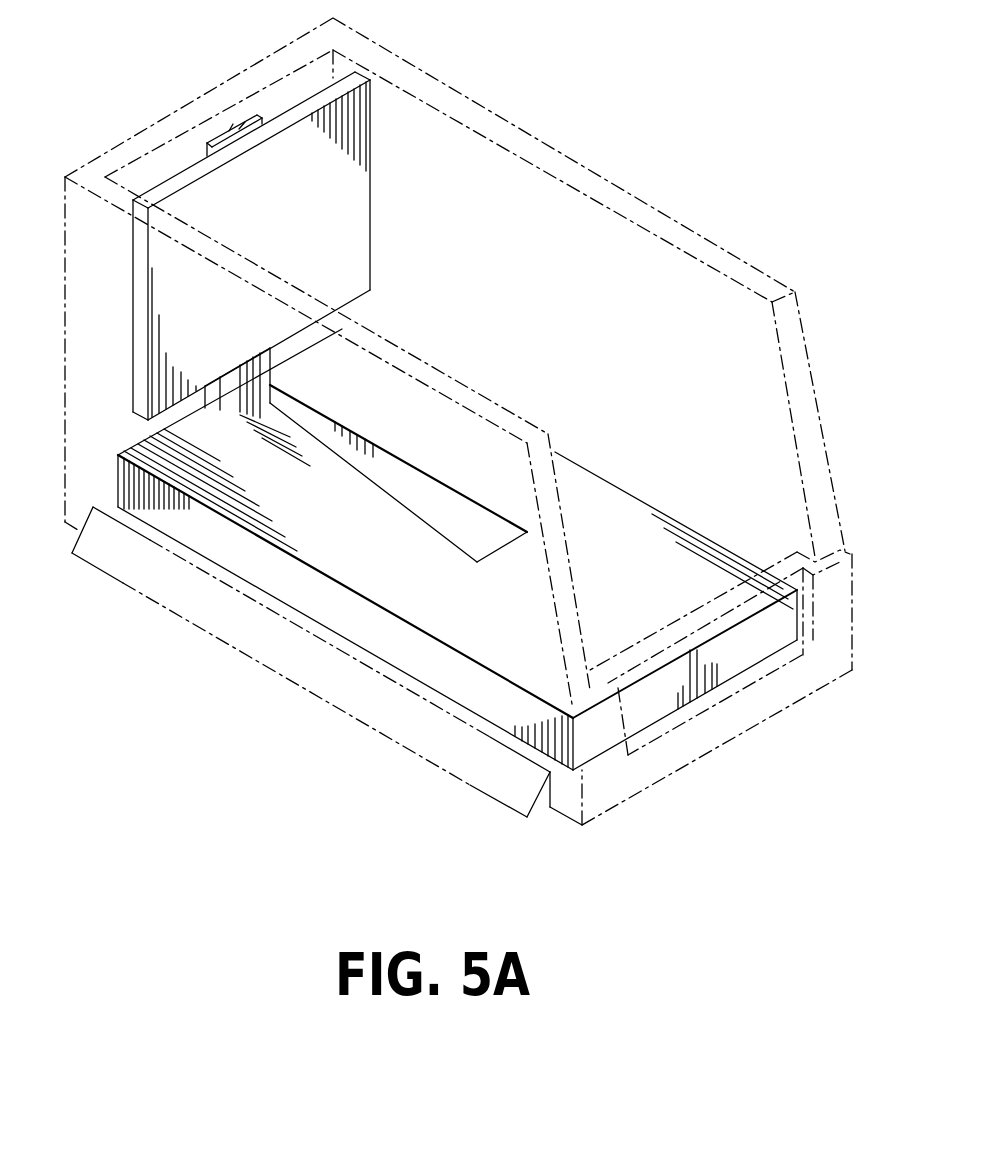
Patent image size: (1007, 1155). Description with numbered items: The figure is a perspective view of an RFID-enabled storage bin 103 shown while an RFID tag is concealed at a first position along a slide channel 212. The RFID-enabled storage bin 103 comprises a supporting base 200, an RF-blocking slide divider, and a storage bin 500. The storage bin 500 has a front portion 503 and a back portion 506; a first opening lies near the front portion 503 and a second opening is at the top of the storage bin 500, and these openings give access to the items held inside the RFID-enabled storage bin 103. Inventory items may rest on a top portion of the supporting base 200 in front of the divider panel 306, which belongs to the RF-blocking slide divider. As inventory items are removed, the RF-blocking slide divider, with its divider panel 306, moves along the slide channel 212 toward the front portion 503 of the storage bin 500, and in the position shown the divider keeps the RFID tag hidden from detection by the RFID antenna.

The RFID-enabled storage bin 103 is at (627, 48).
The supporting base 200 is at (628, 498).
The slide channel 212 is at (360, 436).
The divider panel 306 is at (369, 287).
The storage bin 500 is at (677, 218).
The front portion 503 is at (797, 737).
The back portion 506 is at (162, 106).